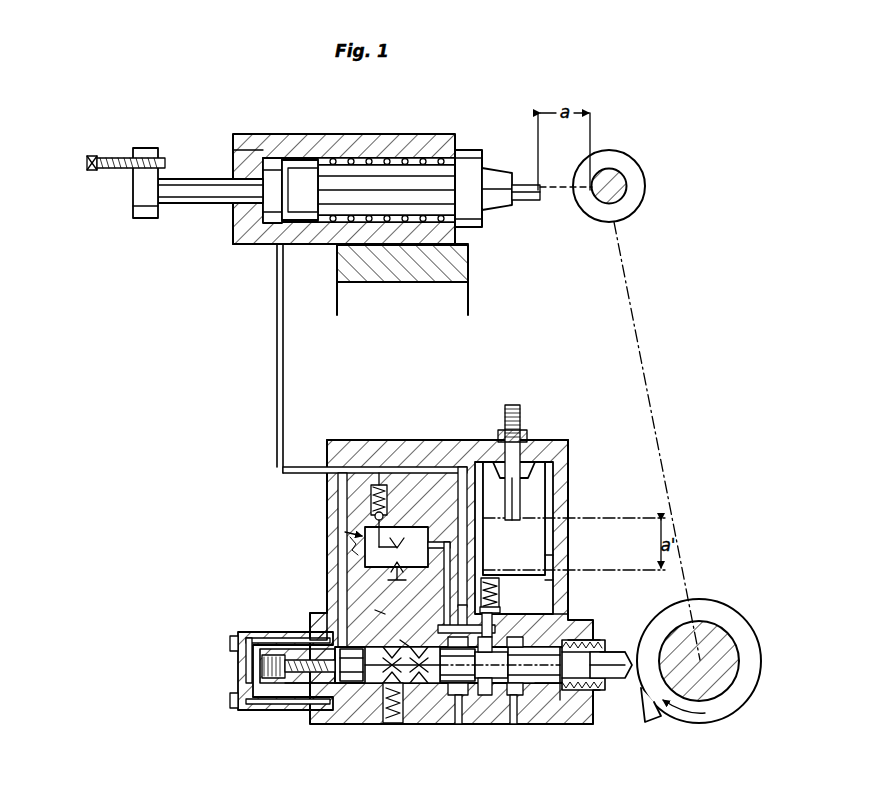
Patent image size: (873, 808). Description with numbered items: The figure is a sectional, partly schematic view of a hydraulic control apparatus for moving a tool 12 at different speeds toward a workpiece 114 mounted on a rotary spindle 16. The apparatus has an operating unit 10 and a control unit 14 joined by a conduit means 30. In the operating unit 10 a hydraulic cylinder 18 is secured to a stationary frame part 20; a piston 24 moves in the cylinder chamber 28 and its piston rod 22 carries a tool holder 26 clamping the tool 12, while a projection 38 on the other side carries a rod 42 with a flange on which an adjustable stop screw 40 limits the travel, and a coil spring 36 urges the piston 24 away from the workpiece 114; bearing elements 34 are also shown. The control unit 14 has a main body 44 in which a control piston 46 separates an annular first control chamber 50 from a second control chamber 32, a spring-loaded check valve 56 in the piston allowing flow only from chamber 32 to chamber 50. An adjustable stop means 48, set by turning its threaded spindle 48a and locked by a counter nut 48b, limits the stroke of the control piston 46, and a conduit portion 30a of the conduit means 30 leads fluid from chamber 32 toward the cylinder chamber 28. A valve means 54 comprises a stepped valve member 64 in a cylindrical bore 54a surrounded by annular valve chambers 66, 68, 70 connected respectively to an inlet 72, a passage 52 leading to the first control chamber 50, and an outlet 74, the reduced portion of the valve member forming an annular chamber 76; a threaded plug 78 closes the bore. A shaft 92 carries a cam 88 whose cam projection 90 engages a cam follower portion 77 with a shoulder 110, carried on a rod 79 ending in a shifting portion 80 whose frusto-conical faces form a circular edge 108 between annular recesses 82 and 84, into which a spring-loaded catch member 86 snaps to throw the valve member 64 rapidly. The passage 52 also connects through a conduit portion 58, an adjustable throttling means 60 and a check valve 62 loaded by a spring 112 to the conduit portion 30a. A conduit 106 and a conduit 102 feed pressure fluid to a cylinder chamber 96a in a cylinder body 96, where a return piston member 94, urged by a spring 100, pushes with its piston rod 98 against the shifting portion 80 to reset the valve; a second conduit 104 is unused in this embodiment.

The operating unit 10 is at (443, 130).
The tool 12 is at (528, 184).
The control unit 14 is at (430, 440).
The rotary spindle 16 is at (636, 160).
The hydraulic cylinder 18 is at (458, 240).
The stationary frame part 20 is at (468, 275).
The piston rod 22 is at (405, 185).
The piston 24 is at (298, 172).
The tool holder 26 is at (492, 178).
The cylinder chamber 28 is at (272, 165).
The conduit means 30 is at (277, 353).
The conduit portion 30a is at (398, 468).
The second control chamber 32 is at (552, 470).
The bearing race 34 is at (336, 160).
The coil spring 36 is at (386, 160).
The projection 38 is at (248, 165).
The adjustable stop screw 40 is at (112, 158).
The rod 42 is at (183, 180).
The main body 44 is at (398, 452).
The control piston 46 is at (560, 580).
The adjustable stop means 48 is at (560, 510).
The threaded spindle 48a is at (513, 418).
The counter nut 48b is at (503, 437).
The first control chamber 50 is at (556, 598).
The passage 52 is at (566, 640).
The valve means 54 is at (452, 698).
The cylindrical bore 54a is at (320, 674).
The spring-loaded check valve 56 is at (560, 555).
The conduit portion 58 is at (405, 640).
The throttling means 60 is at (362, 532).
The check valve 62 is at (370, 505).
The valve member 64 is at (603, 681).
The annular valve chamber 66 is at (486, 696).
The third annular valve chamber 68 is at (514, 700).
The annular valve chamber 70 is at (580, 692).
The inlet 72 is at (459, 700).
The outlet 74 is at (560, 700).
The annular chamber 76 is at (536, 686).
The cam follower portion 77 is at (615, 665).
The threaded plug 78 is at (603, 688).
The rod 79 is at (598, 722).
The shifting portion 80 is at (350, 686).
The annular recess 82 is at (318, 624).
The annular recess 84 is at (416, 684).
The spring-loaded catch member 86 is at (392, 705).
The cam 88 is at (722, 716).
The cam projection 90 is at (650, 714).
The shaft 92 is at (720, 635).
The return piston member 94 is at (270, 698).
The cylinder body 96 is at (240, 662).
The cylinder chamber 96a is at (283, 680).
The piston rod 98 is at (300, 684).
The spring 100 is at (290, 655).
The conduit 102 is at (250, 636).
The second conduit 104 is at (250, 702).
The conduit 106 is at (345, 545).
The circular edge 108 is at (380, 612).
The shoulder 110 is at (592, 645).
The spring 112 is at (373, 488).
The workpiece 114 is at (612, 170).